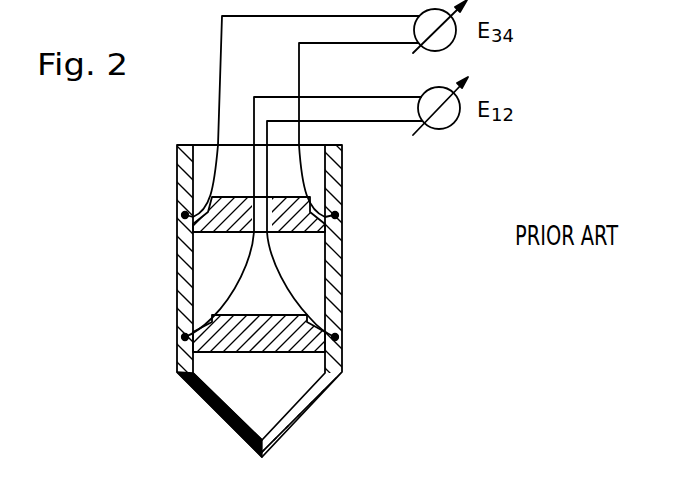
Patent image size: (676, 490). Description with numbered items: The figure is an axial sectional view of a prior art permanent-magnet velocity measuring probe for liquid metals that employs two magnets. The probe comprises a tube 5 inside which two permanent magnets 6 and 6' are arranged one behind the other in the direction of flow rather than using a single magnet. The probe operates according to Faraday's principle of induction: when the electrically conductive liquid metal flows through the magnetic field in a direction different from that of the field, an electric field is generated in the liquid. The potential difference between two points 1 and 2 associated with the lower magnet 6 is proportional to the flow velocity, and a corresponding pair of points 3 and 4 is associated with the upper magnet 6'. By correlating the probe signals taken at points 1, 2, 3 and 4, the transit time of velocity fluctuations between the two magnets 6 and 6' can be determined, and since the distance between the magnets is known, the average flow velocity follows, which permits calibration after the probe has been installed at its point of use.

The point 1 is at (170, 334).
The point 2 is at (350, 334).
The point 3 is at (169, 214).
The point 4 is at (350, 214).
The tube 5 is at (187, 298).
The permanent magnet 6 is at (281, 273).
The permanent magnet 6' is at (281, 255).